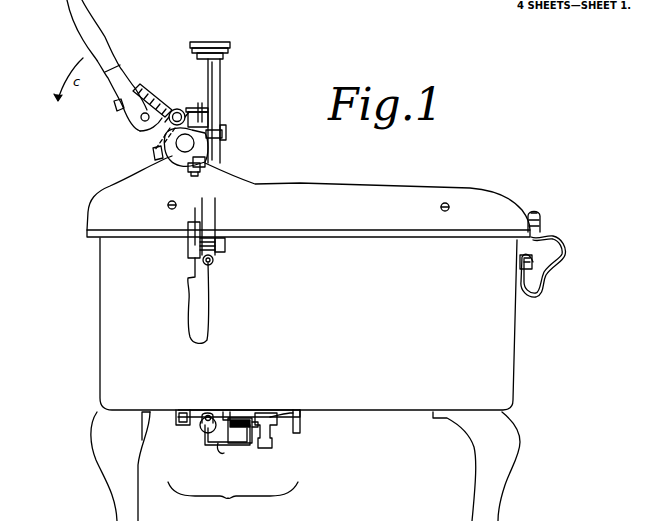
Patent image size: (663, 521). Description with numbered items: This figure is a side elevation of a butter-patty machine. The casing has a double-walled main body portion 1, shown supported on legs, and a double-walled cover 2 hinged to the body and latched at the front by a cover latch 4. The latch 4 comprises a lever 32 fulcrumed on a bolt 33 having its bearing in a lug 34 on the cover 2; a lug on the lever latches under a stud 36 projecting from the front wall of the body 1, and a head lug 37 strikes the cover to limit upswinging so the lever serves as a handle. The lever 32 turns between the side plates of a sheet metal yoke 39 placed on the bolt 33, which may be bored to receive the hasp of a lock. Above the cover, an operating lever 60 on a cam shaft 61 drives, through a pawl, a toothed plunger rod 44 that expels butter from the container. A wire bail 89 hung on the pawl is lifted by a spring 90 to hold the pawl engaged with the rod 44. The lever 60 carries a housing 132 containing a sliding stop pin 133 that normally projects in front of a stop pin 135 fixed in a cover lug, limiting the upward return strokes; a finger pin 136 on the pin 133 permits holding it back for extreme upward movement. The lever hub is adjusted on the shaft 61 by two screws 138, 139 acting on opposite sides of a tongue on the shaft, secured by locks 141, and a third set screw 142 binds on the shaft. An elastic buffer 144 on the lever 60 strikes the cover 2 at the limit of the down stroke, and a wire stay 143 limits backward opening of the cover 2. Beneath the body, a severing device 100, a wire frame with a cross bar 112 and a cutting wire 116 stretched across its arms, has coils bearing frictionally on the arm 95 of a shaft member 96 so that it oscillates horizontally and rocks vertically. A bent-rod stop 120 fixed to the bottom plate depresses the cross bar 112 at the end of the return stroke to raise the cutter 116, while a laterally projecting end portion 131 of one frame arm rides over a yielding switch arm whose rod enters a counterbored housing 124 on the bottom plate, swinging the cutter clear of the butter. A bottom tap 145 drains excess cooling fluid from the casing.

The main double-walled body portion 1 is at (308, 324).
The double-walled cover 2 is at (308, 193).
The cover latch 4 is at (308, 249).
The lever 32 is at (195, 283).
The bolt 33 is at (225, 245).
The lug 34 is at (212, 224).
The stud 36 is at (214, 261).
The head lug 37 is at (195, 215).
The sheet metal yoke 39 is at (188, 223).
The plunger rod 44 is at (210, 100).
The lever 60 is at (92, 30).
The cam shaft 61 is at (183, 147).
The wire bail 89 is at (208, 117).
The spring 90 is at (190, 110).
The arm 95 is at (240, 428).
The shaft member 96 is at (178, 410).
The severing device 100 is at (233, 500).
The cross bar 112 is at (223, 443).
The butter patty cutting wire 116 is at (243, 417).
The stop 120 is at (220, 450).
The counterbored housing 124 is at (206, 428).
The laterally projecting end portion 131 is at (290, 412).
The housing 132 is at (145, 88).
The sliding stop pin 133 is at (168, 128).
The stop pin 135 is at (178, 108).
The finger pin 136 is at (172, 110).
The screw 138 is at (226, 128).
The screw 139 is at (200, 173).
The locks 141 is at (222, 136).
The third set screw 142 is at (153, 153).
The wire stay 143 is at (563, 257).
The elastic buffer 144 is at (112, 107).
The bottom tap 145 is at (271, 436).